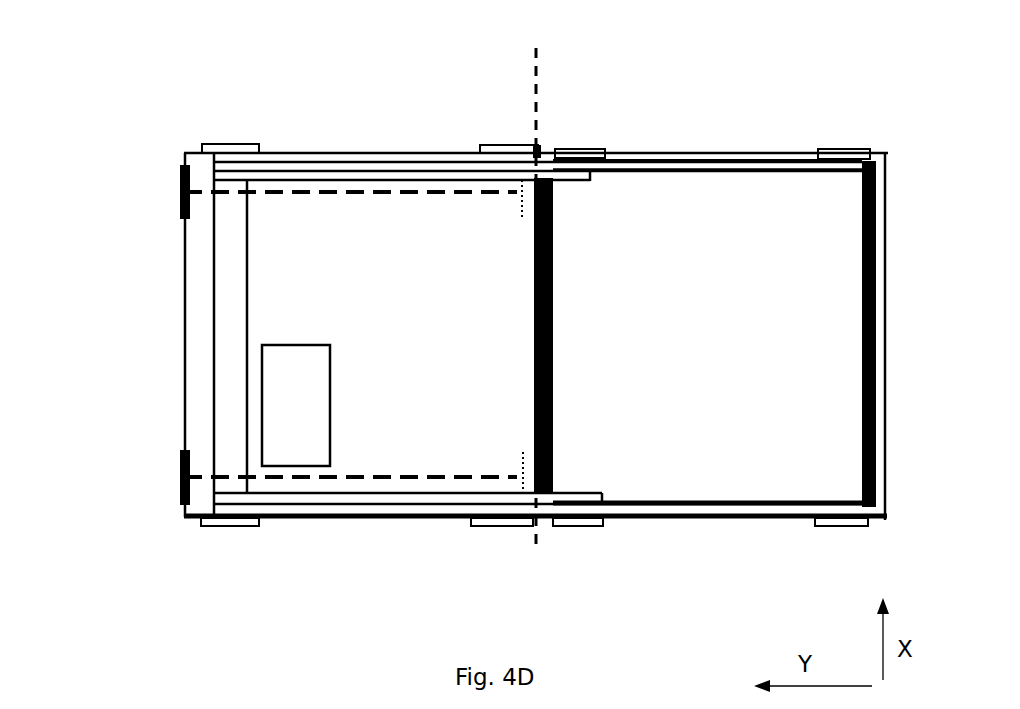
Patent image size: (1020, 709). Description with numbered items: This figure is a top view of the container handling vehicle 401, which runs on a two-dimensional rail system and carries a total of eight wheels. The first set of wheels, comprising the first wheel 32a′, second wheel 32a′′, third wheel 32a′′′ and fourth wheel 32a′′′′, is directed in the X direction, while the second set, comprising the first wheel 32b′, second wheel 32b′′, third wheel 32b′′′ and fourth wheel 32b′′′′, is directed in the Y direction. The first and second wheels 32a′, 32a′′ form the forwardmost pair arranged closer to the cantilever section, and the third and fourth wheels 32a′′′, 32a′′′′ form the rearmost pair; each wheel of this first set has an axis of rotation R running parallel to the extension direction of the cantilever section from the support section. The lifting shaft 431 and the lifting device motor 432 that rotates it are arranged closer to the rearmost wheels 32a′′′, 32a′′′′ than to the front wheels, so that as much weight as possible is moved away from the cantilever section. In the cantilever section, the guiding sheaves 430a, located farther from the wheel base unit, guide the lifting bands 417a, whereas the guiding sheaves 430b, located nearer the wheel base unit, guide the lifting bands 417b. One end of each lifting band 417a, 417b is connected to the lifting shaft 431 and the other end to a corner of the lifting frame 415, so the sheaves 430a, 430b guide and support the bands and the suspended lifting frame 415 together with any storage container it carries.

The container handling vehicle 401 is at (147, 126).
The lifting frame 415 is at (880, 505).
The lifting bands 417a is at (722, 160).
The lifting bands 417b is at (362, 150).
The guiding sheaves 430a is at (826, 150).
The guiding sheaves 430b is at (582, 148).
The lifting shaft 431 is at (227, 433).
The lifting device motor 432 is at (263, 392).
The first wheel 32a′ is at (522, 452).
The second wheel 32a′′ is at (520, 218).
The third wheel 32a′′′ is at (178, 190).
The fourth wheel 32a′′′′ is at (178, 470).
The first wheel 32b′ is at (235, 527).
The second wheel 32b′′ is at (498, 527).
The third wheel 32b′′′ is at (512, 146).
The fourth wheel 32b′′′′ is at (242, 143).
The axis of rotation R is at (320, 196).